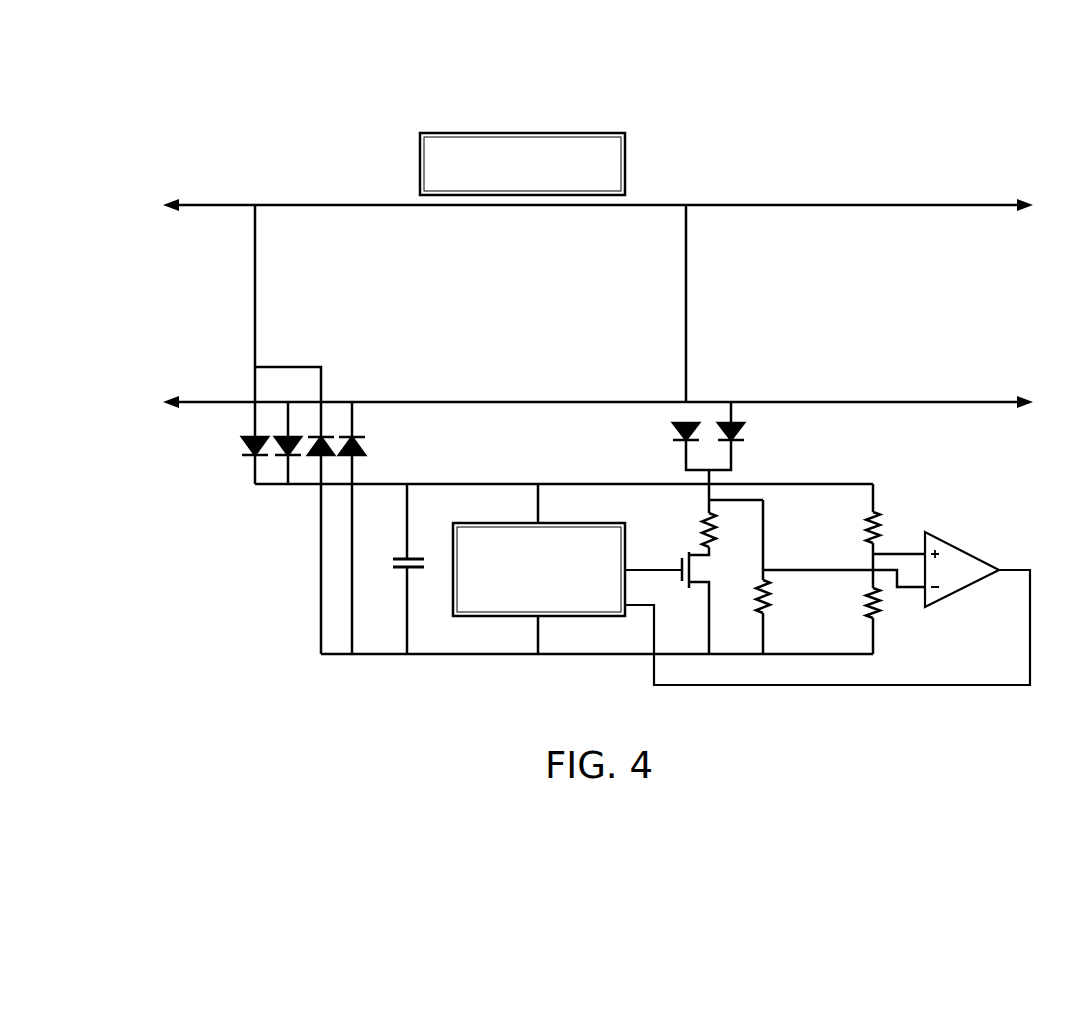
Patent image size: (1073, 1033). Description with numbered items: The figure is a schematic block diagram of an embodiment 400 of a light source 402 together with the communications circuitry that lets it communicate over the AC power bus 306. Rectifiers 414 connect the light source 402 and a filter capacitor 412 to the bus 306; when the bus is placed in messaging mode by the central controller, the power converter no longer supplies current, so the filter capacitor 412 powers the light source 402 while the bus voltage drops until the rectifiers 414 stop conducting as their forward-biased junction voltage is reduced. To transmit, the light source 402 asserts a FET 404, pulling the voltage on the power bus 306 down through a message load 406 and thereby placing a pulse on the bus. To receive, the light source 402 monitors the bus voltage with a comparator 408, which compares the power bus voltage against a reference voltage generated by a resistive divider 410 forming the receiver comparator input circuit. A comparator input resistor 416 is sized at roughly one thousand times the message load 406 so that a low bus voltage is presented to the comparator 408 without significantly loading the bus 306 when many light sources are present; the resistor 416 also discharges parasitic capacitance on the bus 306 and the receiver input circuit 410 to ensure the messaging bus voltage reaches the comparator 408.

The embodiment 400 is at (250, 72).
The AC power bus 306 is at (741, 202).
The rectifiers 414 is at (220, 474).
The filter capacitor 412 is at (401, 558).
The light source 402 is at (490, 522).
The message load 406 is at (701, 526).
The FET 404 is at (697, 584).
The comparator input resistor 416 is at (758, 592).
The resistive divider 410 is at (862, 590).
The comparator 408 is at (956, 593).